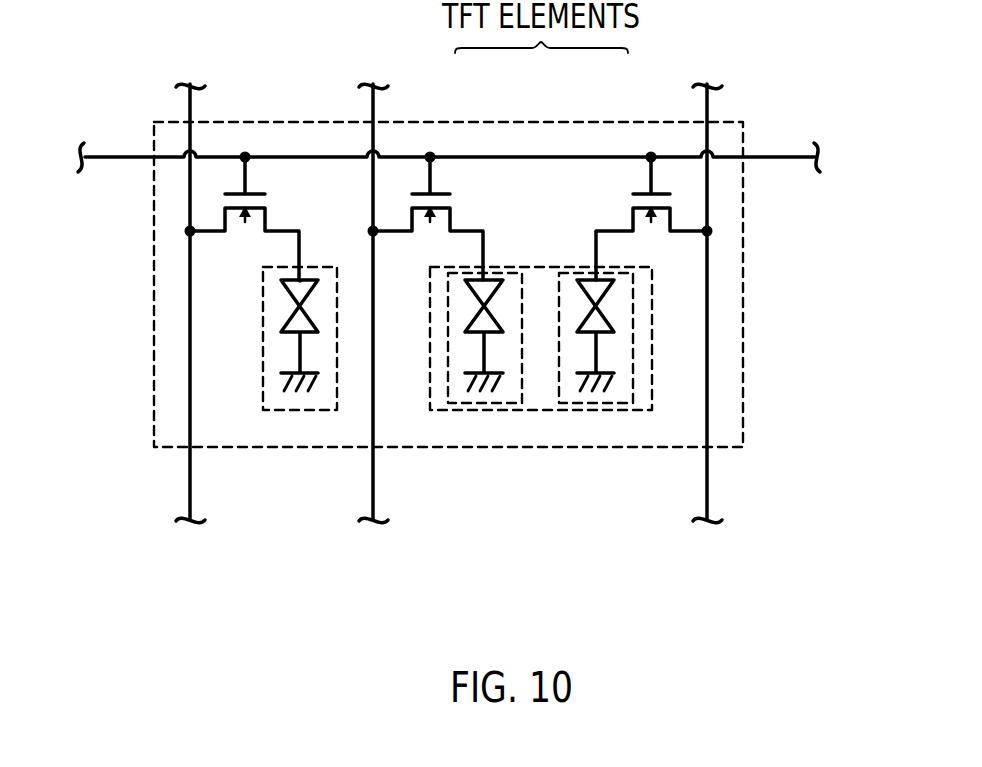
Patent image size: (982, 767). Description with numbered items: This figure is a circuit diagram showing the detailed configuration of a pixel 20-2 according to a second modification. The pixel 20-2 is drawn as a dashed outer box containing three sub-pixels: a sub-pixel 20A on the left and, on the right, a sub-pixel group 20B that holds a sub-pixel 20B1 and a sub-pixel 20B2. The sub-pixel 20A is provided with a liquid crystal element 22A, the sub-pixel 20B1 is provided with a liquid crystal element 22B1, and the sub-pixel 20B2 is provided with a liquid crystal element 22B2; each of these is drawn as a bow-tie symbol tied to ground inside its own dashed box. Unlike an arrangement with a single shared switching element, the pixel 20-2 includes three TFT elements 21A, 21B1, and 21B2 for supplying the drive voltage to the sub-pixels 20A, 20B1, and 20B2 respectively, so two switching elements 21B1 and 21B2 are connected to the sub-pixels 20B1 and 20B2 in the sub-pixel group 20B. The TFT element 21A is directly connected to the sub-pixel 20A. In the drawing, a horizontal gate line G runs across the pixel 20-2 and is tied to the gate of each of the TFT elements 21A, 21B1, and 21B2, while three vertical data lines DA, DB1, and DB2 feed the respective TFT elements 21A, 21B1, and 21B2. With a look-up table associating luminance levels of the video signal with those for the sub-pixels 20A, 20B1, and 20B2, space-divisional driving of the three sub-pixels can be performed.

The gate line G is at (794, 157).
The data line A DA is at (190, 107).
The data line B1 DB1 is at (373, 107).
The data line B2 DB2 is at (710, 107).
The pixel 20-2 is at (243, 450).
The sub-pixel 20A is at (262, 325).
The sub-pixel group 20B is at (652, 287).
The sub-pixel 20B1 is at (462, 405).
The sub-pixel 20B2 is at (575, 405).
The TFT element 21A is at (196, 213).
The switching element 21B1 is at (486, 185).
The switching element 21B2 is at (597, 185).
The liquid crystal element 22A is at (331, 349).
The liquid crystal element 22B1 is at (515, 349).
The liquid crystal element 22B2 is at (626, 349).